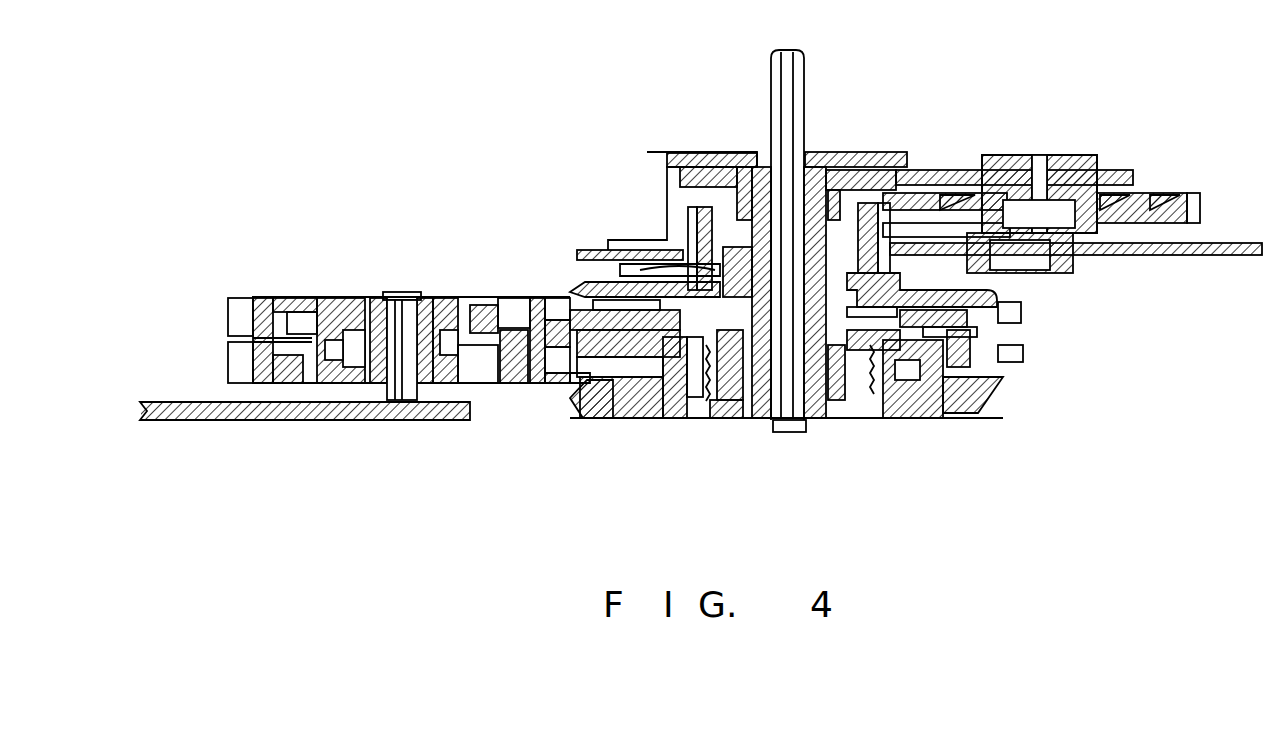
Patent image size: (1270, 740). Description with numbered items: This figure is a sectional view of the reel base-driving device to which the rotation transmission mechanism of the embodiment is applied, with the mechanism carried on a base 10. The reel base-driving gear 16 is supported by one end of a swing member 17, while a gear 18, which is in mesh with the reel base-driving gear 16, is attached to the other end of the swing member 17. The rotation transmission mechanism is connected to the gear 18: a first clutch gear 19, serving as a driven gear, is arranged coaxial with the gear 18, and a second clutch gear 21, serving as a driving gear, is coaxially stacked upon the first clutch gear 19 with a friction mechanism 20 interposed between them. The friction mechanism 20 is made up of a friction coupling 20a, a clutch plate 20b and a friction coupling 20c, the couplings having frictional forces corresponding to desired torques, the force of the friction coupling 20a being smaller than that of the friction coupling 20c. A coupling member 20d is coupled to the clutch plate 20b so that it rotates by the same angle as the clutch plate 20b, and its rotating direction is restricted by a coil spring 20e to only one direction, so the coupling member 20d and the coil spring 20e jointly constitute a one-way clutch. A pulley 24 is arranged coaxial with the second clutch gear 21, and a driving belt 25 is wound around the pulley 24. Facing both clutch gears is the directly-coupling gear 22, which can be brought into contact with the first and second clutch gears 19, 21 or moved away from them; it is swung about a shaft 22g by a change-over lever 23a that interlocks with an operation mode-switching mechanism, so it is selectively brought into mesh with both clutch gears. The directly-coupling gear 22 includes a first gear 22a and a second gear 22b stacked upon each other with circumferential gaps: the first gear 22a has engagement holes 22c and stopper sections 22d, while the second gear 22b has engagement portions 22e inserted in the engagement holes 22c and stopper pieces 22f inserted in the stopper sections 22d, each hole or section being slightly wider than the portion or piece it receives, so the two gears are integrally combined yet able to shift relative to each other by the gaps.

The base plate 10 is at (1182, 255).
The reel base-driving gear 16 is at (1205, 207).
The swing member 17 is at (950, 165).
The gear 18 is at (690, 218).
The first clutch gear 19 is at (1022, 315).
The friction mechanism 20 is at (816, 336).
The friction coupling 20a is at (572, 288).
The clutch plate 20b is at (930, 320).
The friction coupling 20c is at (985, 330).
The coupling member 20d is at (643, 275).
The coil spring 20e is at (944, 295).
The second clutch gear 21 is at (1023, 355).
The directly-coupling gear 22 is at (353, 341).
The first gear 22a is at (228, 350).
The second gear 22b is at (252, 305).
The engagement hole 22c is at (512, 330).
The stopper section 22d is at (330, 365).
The engagement portion 22e is at (470, 310).
The stopper piece 22f is at (300, 325).
The shaft 22g is at (405, 395).
The change-over lever 23a is at (190, 421).
The pulley 24 is at (597, 420).
The driving belt 25 is at (1000, 395).